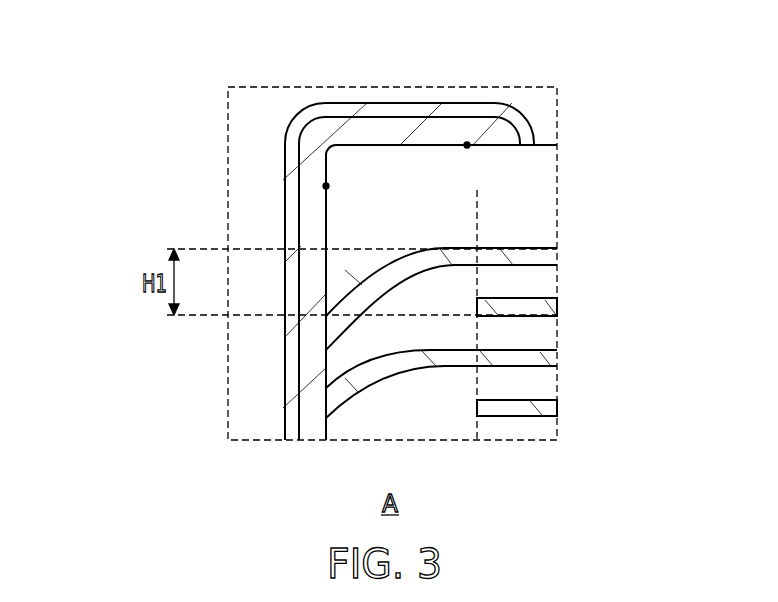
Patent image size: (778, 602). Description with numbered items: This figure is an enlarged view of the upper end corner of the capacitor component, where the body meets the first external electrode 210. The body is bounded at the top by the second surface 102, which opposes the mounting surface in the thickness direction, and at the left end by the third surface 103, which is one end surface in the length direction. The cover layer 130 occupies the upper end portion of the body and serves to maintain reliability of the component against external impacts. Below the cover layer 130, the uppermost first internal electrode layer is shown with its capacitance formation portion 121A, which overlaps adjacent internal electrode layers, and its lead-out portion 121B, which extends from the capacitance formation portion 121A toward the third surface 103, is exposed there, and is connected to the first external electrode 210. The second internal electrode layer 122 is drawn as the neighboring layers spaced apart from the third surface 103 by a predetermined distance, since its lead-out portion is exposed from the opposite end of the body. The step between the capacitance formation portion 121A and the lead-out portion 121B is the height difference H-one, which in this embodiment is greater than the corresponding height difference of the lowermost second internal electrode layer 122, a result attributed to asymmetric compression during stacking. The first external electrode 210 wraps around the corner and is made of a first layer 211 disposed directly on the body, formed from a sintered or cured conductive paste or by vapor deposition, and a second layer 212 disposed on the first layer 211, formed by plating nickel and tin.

The second surface 102 is at (467, 145).
The third surface 103 is at (326, 186).
The cover layer 130 is at (548, 172).
The capacitance formation portion 121A is at (548, 260).
The lead-out portion 121B is at (353, 303).
The second internal electrode layer 122 is at (548, 310).
The first external electrode 210 is at (157, 394).
The first layer 211 is at (312, 403).
The second layer 212 is at (291, 383).